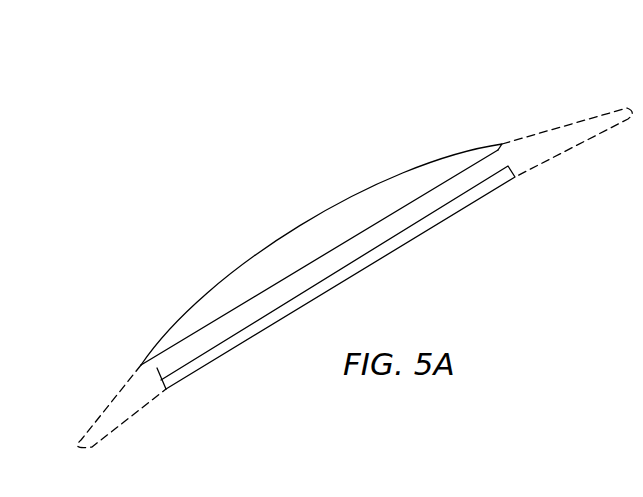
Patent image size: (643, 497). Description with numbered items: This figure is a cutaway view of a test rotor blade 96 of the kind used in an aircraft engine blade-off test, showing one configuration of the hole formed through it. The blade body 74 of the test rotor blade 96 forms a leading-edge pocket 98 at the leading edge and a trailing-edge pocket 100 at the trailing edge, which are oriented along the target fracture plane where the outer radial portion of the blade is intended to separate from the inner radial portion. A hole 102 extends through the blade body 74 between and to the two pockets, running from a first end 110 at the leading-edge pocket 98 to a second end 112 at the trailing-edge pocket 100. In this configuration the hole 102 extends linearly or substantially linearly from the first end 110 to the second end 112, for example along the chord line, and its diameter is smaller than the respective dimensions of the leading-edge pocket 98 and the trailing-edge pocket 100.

The test rotor blade 96 is at (529, 113).
The leading-edge pocket 98 is at (153, 398).
The trailing-edge pocket 100 is at (540, 160).
The blade body 74 is at (405, 188).
The hole 102 is at (465, 182).
The second end 112 is at (493, 172).
The first end 110 is at (176, 368).